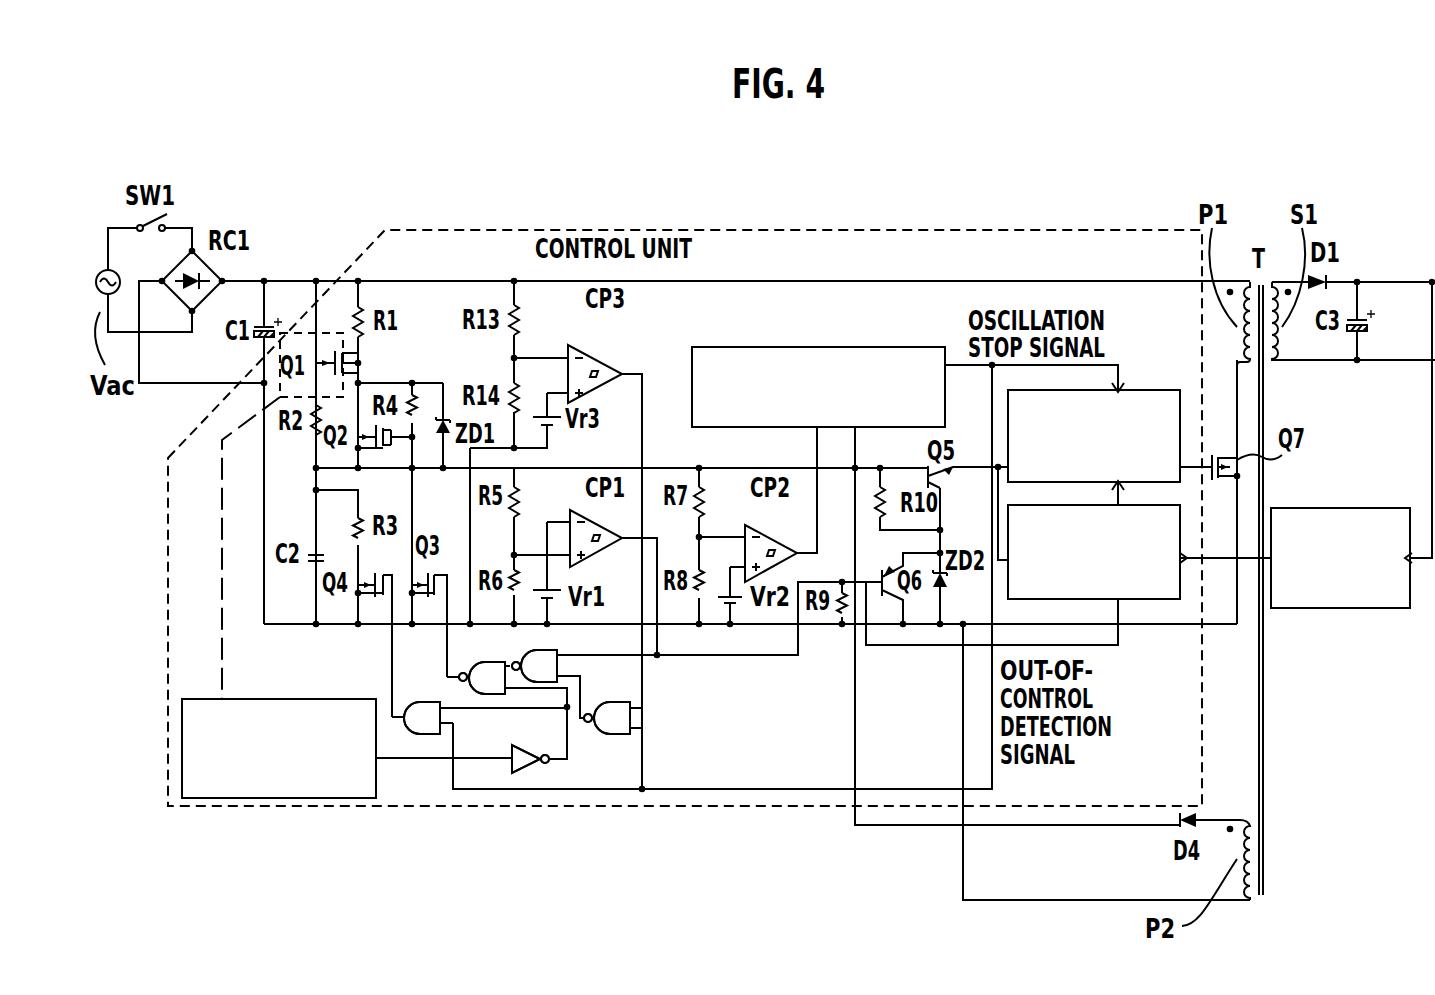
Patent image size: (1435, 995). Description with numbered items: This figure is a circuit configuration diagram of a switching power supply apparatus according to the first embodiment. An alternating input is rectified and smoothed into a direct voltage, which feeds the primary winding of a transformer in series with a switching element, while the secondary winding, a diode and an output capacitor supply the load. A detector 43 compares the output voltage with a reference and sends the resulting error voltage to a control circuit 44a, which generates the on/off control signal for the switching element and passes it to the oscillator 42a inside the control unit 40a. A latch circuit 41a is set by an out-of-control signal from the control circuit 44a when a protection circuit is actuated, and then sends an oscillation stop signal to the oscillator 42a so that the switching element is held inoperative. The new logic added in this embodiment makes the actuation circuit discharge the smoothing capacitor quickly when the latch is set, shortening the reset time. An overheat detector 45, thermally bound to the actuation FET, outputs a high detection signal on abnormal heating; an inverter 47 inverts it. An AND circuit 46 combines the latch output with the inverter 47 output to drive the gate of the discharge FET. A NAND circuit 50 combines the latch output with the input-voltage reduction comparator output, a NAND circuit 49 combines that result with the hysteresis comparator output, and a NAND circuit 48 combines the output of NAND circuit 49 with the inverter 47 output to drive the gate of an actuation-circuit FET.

The control unit 40a is at (700, 229).
The latch circuit 41a is at (858, 347).
The oscillator 42a is at (1152, 390).
The detector 43 is at (1395, 508).
The control circuit 44a is at (1160, 599).
The overheat detector 45 is at (294, 699).
The AND circuit 46 is at (434, 702).
The inverter 47 is at (528, 773).
The NAND circuit 48 is at (488, 695).
The NAND circuit 49 is at (560, 663).
The NAND circuit 50 is at (632, 723).